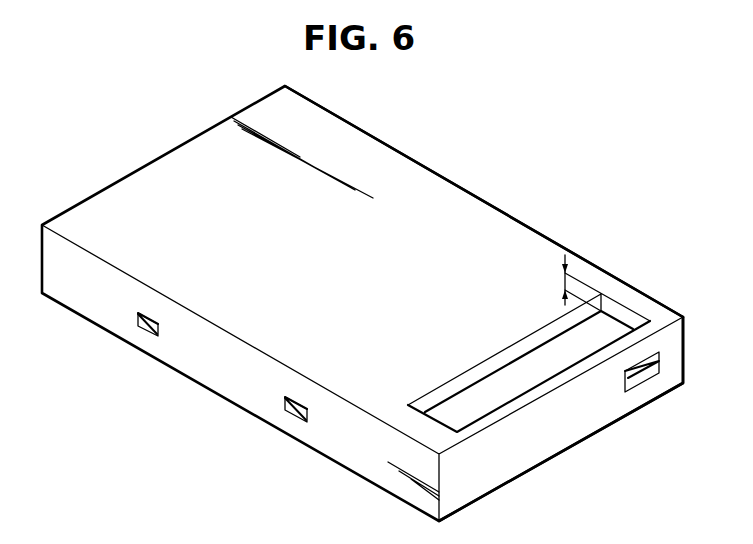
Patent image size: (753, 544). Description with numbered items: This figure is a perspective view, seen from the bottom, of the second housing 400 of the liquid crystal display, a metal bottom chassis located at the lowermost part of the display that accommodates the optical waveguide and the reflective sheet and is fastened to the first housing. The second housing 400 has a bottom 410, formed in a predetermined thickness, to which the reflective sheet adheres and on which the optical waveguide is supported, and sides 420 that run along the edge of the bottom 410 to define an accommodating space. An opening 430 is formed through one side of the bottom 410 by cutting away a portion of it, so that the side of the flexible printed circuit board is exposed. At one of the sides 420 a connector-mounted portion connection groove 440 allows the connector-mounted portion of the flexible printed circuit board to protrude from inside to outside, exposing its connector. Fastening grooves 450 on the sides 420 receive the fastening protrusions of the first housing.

The second housing 400 is at (160, 140).
The bottom 410 is at (442, 202).
The sides 420 is at (502, 463).
The opening 430 is at (604, 322).
The connector-mounted portion connection groove 440 is at (637, 378).
The fastening grooves 450 is at (292, 416).